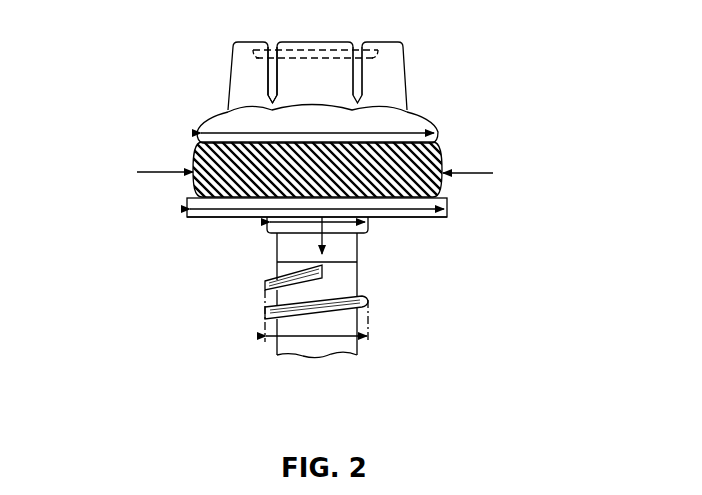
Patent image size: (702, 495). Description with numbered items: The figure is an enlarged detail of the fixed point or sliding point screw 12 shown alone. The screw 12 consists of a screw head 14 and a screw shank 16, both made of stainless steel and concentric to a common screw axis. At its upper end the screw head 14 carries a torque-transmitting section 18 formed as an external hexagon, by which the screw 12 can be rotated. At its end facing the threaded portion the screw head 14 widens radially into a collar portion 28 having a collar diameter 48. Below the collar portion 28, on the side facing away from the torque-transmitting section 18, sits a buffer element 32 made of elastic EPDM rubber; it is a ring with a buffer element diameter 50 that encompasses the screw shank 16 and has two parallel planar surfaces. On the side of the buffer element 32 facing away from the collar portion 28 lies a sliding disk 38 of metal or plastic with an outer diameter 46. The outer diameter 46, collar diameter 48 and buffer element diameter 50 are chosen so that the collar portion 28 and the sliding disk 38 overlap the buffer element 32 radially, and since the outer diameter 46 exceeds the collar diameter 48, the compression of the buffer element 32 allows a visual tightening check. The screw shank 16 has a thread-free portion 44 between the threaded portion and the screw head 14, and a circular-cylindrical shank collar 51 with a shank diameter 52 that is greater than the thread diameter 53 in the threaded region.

The fixed point or sliding point screw 12 is at (499, 56).
The screw head 14 is at (387, 70).
The screw shank 16 is at (345, 275).
The torque-transmitting section 18 is at (273, 71).
The collar portion 28 is at (436, 131).
The buffer element 32 is at (437, 158).
The sliding disk 38 is at (447, 199).
The thread-free portion 44 is at (335, 233).
The outer diameter 46 is at (428, 218).
The collar diameter 48 is at (232, 131).
The buffer element diameter 50 is at (157, 171).
The shank collar 51 is at (266, 219).
The shank diameter 52 is at (303, 224).
The thread diameter 53 is at (323, 337).